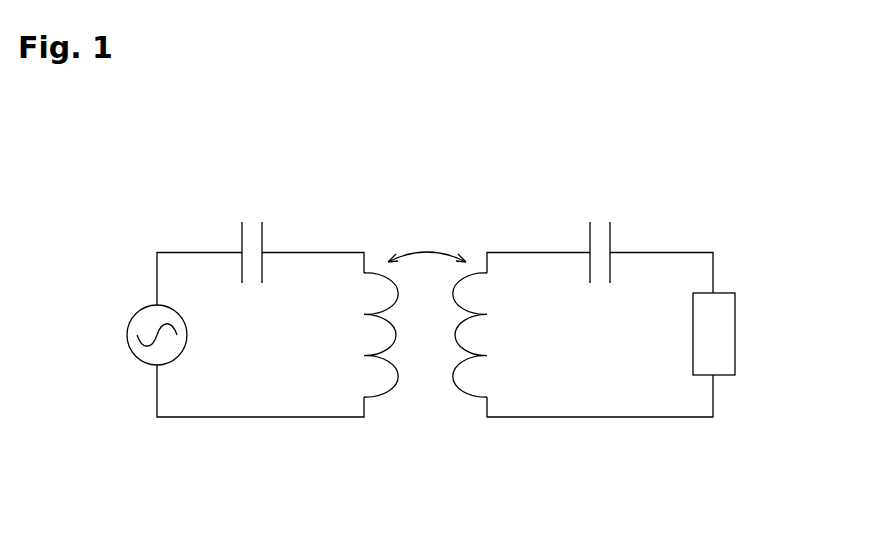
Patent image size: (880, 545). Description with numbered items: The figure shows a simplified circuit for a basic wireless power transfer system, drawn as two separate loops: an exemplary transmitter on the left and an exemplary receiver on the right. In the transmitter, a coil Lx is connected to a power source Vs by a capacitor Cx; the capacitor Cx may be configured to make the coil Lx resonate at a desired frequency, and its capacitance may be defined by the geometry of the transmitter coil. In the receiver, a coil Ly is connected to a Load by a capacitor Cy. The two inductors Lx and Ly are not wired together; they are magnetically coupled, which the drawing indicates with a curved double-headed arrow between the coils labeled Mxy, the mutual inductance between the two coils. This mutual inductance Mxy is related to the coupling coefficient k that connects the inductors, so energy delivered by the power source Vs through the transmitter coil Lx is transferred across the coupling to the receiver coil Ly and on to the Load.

The power source Vs is at (136, 335).
The capacitor Cx is at (251, 240).
The coil Lx is at (380, 307).
The mutual inductance Mxy is at (427, 244).
The coil Ly is at (472, 306).
The capacitor Cy is at (602, 238).
The load Load is at (741, 334).